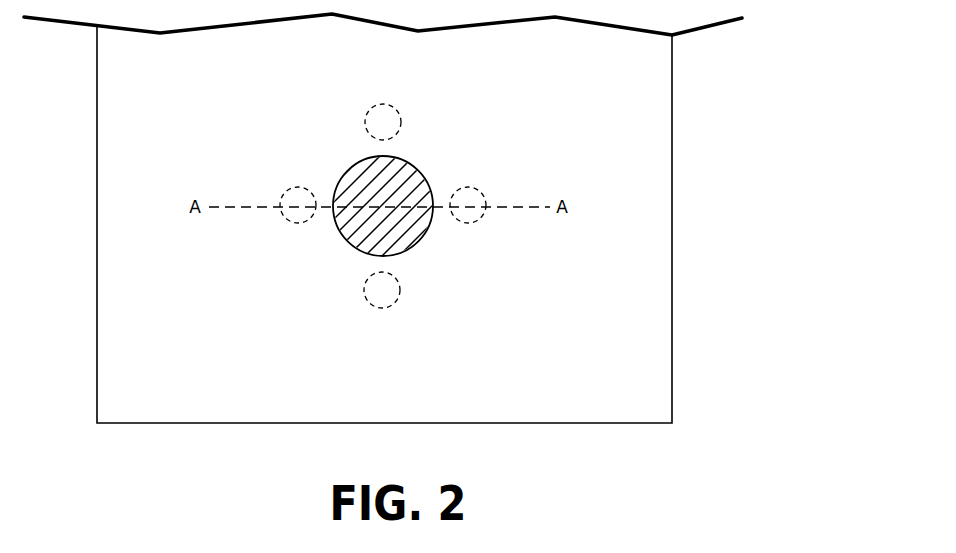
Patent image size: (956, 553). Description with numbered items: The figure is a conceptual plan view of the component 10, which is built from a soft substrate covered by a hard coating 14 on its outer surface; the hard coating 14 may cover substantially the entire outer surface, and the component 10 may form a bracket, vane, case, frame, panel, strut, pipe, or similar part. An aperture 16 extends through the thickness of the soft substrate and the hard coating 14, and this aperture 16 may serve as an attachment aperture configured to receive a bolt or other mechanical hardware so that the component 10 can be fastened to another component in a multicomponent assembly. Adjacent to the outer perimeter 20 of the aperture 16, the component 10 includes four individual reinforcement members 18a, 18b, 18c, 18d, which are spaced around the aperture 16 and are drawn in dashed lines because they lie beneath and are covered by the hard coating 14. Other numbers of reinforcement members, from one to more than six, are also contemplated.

The component 10 is at (760, 150).
The hard coating 14 is at (645, 340).
The aperture 16 is at (424, 247).
The reinforcement member 18a is at (378, 116).
The reinforcement member 18b is at (465, 218).
The reinforcement member 18c is at (388, 290).
The reinforcement member 18d is at (300, 222).
The outer perimeter 20 is at (341, 180).